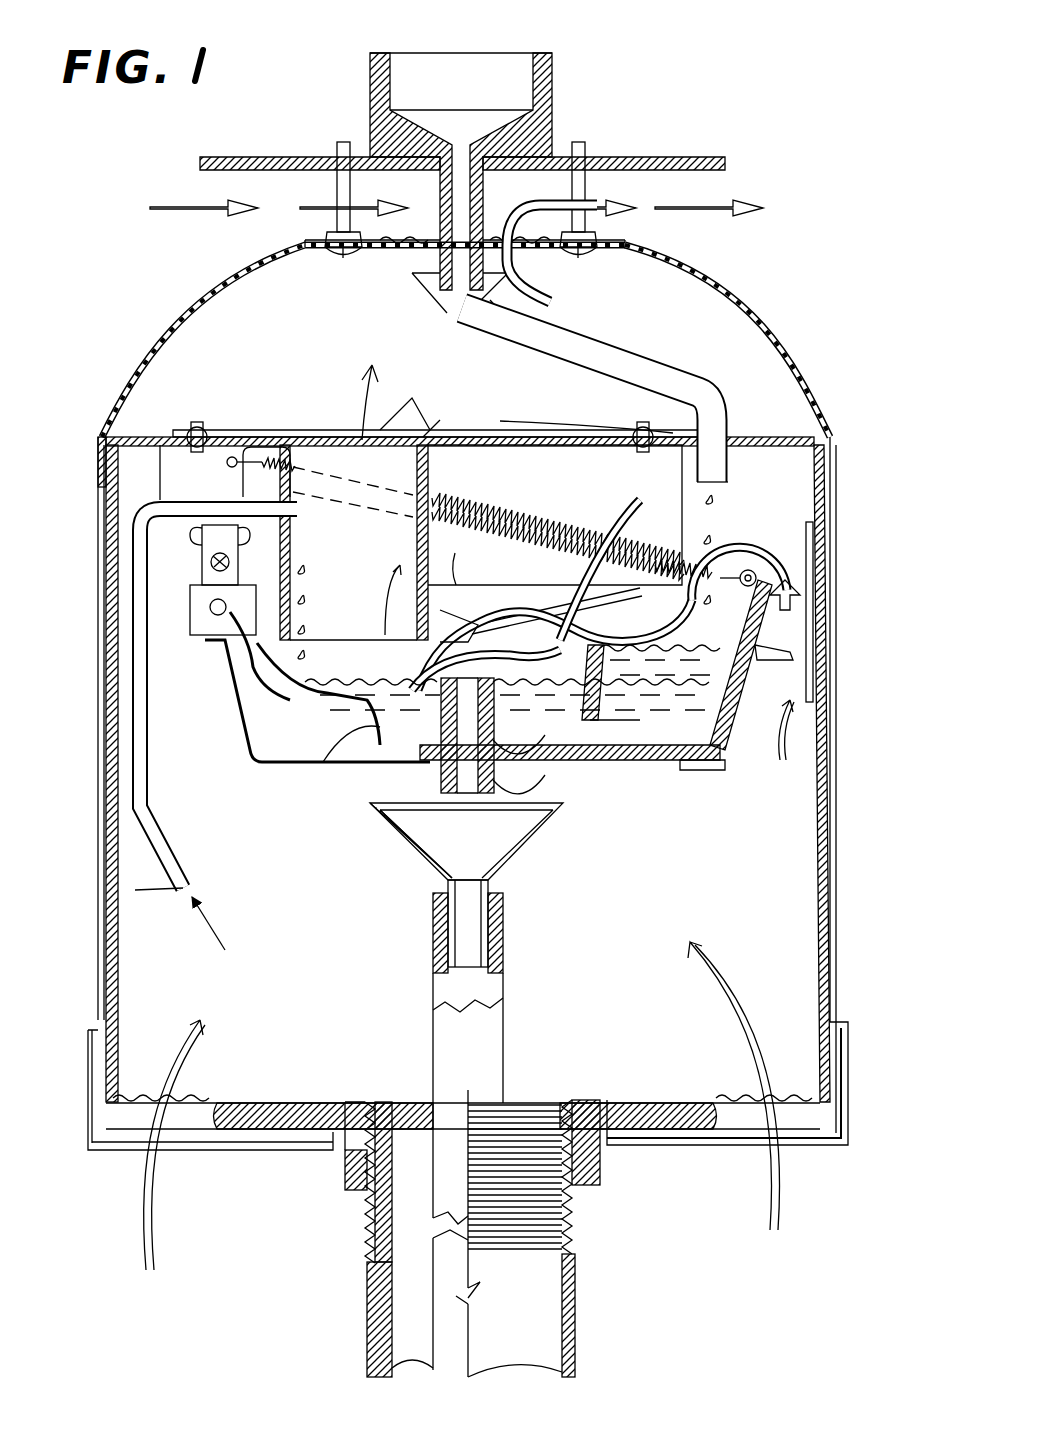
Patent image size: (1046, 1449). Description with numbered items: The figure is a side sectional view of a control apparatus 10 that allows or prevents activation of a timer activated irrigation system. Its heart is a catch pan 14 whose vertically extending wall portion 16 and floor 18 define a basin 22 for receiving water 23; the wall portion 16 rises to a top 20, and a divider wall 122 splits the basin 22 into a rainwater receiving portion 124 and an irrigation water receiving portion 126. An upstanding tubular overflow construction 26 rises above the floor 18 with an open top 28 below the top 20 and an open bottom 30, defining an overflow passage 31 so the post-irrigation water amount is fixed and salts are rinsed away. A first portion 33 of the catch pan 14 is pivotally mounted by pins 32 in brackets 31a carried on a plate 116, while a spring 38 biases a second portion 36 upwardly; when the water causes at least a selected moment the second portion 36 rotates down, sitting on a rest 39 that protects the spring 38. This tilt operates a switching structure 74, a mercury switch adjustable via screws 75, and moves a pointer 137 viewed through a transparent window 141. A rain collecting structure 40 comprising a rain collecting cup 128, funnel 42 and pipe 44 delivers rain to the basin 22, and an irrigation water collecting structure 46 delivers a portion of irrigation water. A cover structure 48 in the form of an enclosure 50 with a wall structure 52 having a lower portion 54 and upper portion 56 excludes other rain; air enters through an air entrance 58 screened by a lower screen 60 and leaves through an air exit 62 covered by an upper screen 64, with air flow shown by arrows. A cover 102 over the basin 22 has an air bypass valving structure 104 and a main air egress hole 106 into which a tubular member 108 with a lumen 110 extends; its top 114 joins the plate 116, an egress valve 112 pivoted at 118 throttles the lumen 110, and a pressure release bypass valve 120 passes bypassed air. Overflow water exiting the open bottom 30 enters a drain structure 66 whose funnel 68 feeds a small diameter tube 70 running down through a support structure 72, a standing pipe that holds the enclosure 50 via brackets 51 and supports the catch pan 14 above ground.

The control apparatus 10 is at (760, 298).
The catch pan 14 is at (291, 701).
The wall portion 16 is at (760, 640).
The floor 18 is at (440, 775).
The top of the wall portion 20 is at (453, 553).
The basin 22 is at (645, 568).
The water 23 is at (339, 763).
The overflow construction 26 is at (420, 712).
The open top 28 is at (518, 668).
The open bottom 30 is at (500, 808).
The overflow passage 31 is at (435, 672).
The bracket 31a is at (205, 492).
The pins 32 is at (305, 678).
The first portion of the catch pan 33 is at (212, 618).
The second portion of the catch pan 36 is at (765, 575).
The spring 38 is at (492, 508).
The rest 39 is at (690, 775).
The rain collecting structure 40 is at (435, 342).
The funnel 42 is at (513, 317).
The pipe 44 is at (605, 355).
The irrigation water collecting structure 46 is at (175, 784).
The cover structure 48 is at (140, 302).
The enclosure 50 is at (118, 412).
The brackets 51 is at (838, 1048).
The wall structure 52 is at (836, 787).
The lower portion 54 is at (830, 1010).
The upper portion 56 is at (668, 262).
The air entrance 58 is at (185, 1170).
The lower screen 60 is at (150, 1098).
The air exit 62 is at (398, 258).
The upper screen 64 is at (485, 240).
The drain structure 66 is at (405, 905).
The funnel 68 is at (517, 848).
The small diameter tube 70 is at (505, 962).
The support structure 72 is at (560, 1300).
The switching structure 74 is at (185, 558).
The screws 75 is at (210, 560).
The cover 102 is at (598, 560).
The air bypass valving structure 104 is at (512, 595).
The main air egress hole 106 is at (464, 610).
The tubular member 108 is at (432, 485).
The lumen 110 is at (370, 545).
The egress valve 112 is at (420, 392).
The top of the tubular member 114 is at (420, 425).
The plate 116 is at (500, 432).
The pivot mount 118 is at (200, 420).
The pressure release bypass valve 120 is at (585, 420).
The divider wall 122 is at (605, 700).
The rainwater receiving portion 124 is at (728, 762).
The irrigation water receiving portion 126 is at (570, 728).
The rain collecting cup 128 is at (560, 48).
The pointer 137 is at (808, 658).
The transparent window 141 is at (830, 590).